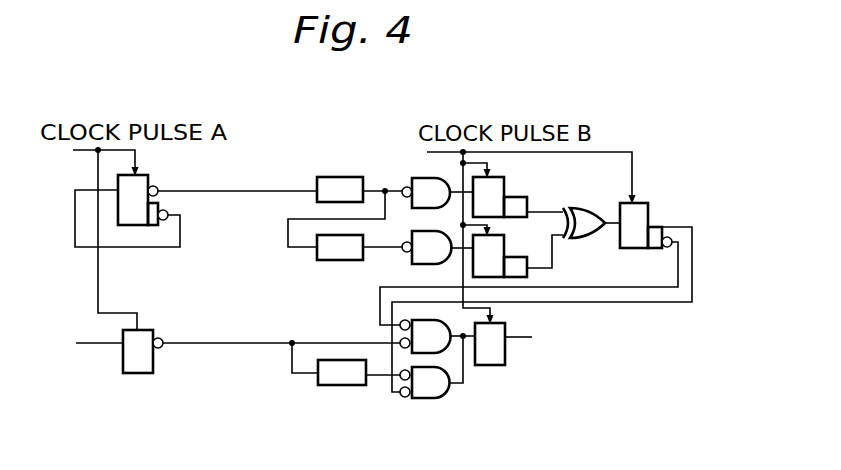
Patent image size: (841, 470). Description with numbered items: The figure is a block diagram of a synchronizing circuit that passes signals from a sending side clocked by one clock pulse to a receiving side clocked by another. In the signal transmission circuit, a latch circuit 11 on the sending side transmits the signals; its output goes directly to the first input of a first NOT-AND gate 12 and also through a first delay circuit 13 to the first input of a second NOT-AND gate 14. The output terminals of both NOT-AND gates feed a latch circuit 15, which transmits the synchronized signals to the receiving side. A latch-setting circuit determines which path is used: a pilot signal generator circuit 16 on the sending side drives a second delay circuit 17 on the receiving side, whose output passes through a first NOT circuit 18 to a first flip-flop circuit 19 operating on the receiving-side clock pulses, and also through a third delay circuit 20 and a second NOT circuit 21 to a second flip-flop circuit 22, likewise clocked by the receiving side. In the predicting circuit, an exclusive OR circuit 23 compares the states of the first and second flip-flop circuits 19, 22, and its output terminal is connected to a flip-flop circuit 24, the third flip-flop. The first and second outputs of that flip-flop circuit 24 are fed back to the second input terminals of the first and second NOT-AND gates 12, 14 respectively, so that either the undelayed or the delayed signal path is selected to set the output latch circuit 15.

The latch circuit 11 is at (138, 373).
The first NOT-AND gate 12 is at (420, 320).
The first delay circuit 13 is at (345, 385).
The second NOT-AND gate 14 is at (430, 398).
The latch circuit 15 is at (495, 365).
The pilot signal generator circuit 16 is at (148, 176).
The second delay circuit 17 is at (348, 177).
The first NOT circuit 18 is at (420, 178).
The first flip-flop circuit 19 is at (505, 178).
The third delay circuit 20 is at (343, 260).
The second NOT circuit 21 is at (420, 265).
The second flip-flop circuit 22 is at (504, 243).
The exclusive OR circuit 23 is at (590, 238).
The flip-flop circuit 24 is at (648, 205).